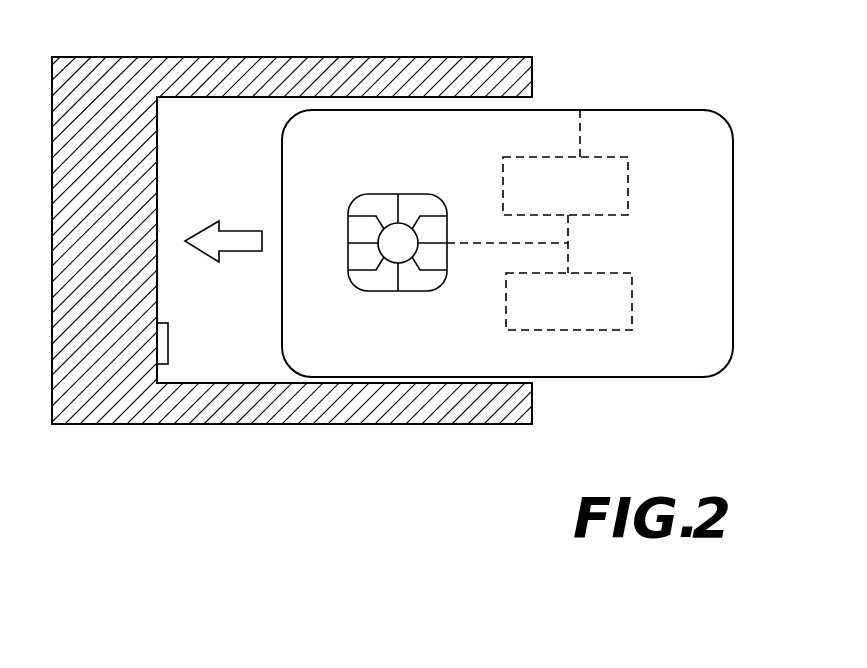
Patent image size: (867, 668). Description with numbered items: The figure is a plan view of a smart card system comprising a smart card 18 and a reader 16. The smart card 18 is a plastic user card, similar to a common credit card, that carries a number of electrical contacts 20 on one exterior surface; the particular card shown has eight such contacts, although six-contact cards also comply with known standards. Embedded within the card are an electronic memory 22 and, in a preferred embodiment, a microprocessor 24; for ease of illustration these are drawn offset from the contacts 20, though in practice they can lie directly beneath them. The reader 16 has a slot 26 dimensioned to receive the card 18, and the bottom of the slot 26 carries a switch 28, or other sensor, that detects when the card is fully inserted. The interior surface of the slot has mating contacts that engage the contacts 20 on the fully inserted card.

The reader 16 is at (219, 68).
The slot 26 is at (275, 112).
The smart card 18 is at (703, 182).
The electrical contacts 20 is at (385, 194).
The electronic memory 22 is at (583, 110).
The microprocessor 24 is at (568, 330).
The switch 28 is at (172, 350).